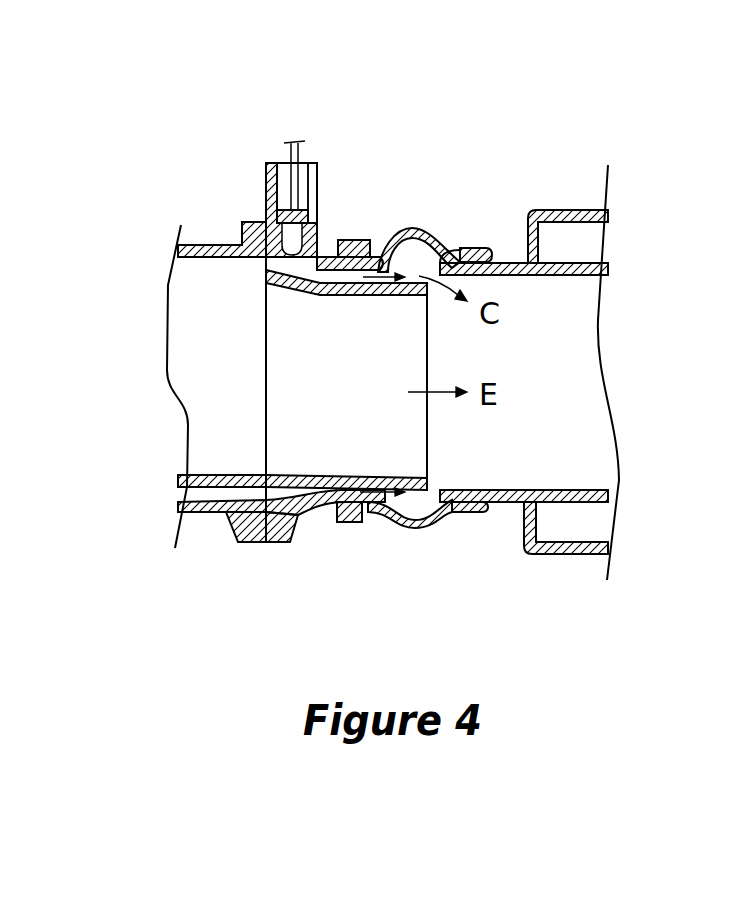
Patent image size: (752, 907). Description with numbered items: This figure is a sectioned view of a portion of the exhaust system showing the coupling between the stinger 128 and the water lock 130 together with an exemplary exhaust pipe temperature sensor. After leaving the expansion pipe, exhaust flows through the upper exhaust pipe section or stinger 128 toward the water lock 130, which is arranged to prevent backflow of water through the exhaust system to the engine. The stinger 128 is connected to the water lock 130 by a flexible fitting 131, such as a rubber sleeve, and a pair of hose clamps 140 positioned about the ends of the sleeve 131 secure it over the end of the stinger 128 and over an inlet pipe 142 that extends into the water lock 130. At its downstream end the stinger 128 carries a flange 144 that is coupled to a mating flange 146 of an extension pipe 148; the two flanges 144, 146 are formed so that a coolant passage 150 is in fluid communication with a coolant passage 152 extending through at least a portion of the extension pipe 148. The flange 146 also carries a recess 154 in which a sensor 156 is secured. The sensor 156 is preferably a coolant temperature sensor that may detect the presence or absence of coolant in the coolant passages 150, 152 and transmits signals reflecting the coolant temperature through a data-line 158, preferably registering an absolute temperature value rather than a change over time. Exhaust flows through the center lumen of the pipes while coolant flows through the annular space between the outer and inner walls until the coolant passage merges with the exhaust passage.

The stinger 128 is at (207, 513).
The water lock 130 is at (577, 557).
The flexible fitting 131 is at (402, 535).
The hose clamps 140 is at (353, 240).
The inlet pipe 142 is at (520, 507).
The flange 144 is at (252, 545).
The flange 146 is at (313, 165).
The extension pipe 148 is at (303, 513).
The coolant passage 150 is at (218, 262).
The coolant passage 152 is at (430, 272).
The recess 154 is at (287, 170).
The sensor 156 is at (297, 218).
The data-line 158 is at (300, 142).